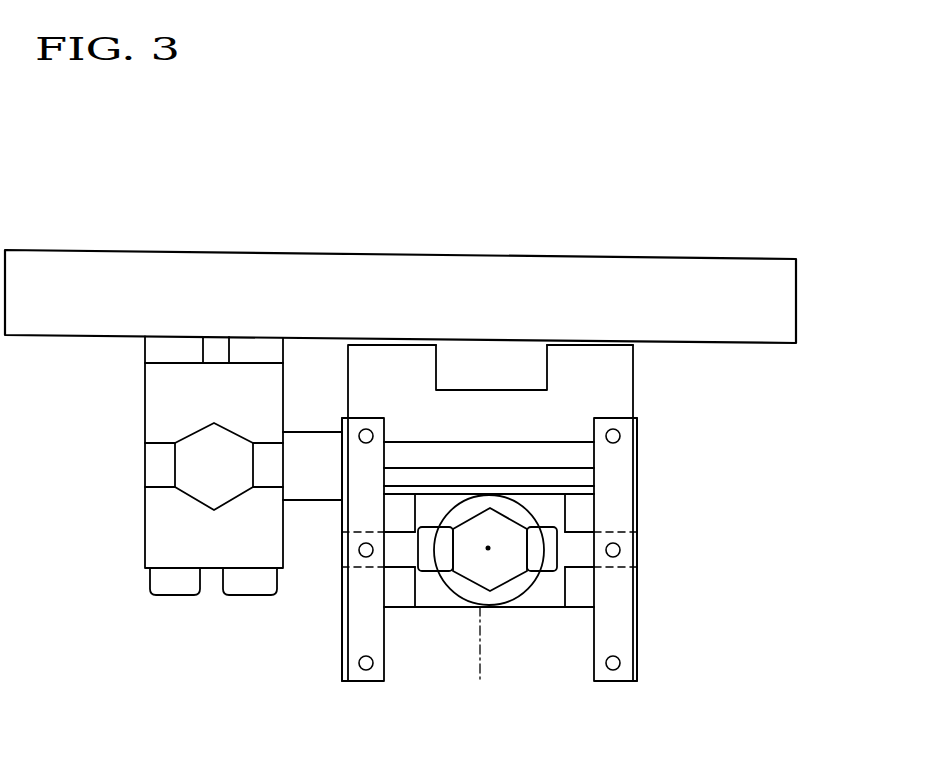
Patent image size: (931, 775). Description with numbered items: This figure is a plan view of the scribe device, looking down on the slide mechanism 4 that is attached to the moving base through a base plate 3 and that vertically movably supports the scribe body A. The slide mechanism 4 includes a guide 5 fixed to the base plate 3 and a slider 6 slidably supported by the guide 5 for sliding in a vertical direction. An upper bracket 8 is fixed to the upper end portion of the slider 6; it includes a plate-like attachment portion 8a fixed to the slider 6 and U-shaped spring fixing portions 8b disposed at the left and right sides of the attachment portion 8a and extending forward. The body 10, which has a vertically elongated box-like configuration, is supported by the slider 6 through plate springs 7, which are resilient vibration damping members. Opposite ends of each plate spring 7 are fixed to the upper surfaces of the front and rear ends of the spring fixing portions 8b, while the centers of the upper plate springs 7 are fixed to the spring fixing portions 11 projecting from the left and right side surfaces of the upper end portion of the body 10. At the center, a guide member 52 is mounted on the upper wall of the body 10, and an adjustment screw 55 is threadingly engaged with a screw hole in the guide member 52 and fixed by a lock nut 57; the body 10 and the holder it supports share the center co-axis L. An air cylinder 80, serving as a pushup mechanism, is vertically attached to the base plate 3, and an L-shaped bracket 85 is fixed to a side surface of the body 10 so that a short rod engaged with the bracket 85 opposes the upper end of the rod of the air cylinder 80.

The base plate 3 is at (672, 258).
The slide mechanism 4 is at (642, 384).
The guide 5 is at (493, 362).
The slider 6 is at (400, 373).
The plate spring 7 is at (615, 627).
The upper bracket 8 is at (645, 517).
The attachment portion 8a is at (548, 458).
The spring fixing portion 8b is at (640, 472).
The body 10 is at (551, 616).
The spring fixing portion 11 is at (577, 562).
The guide member 52 is at (445, 587).
The adjustment screw 55 is at (488, 548).
The lock nut 57 is at (425, 526).
The air cylinder 80 is at (170, 529).
The L-shaped bracket 85 is at (313, 432).
The center co-axis L is at (482, 663).
The scribe body A is at (572, 630).